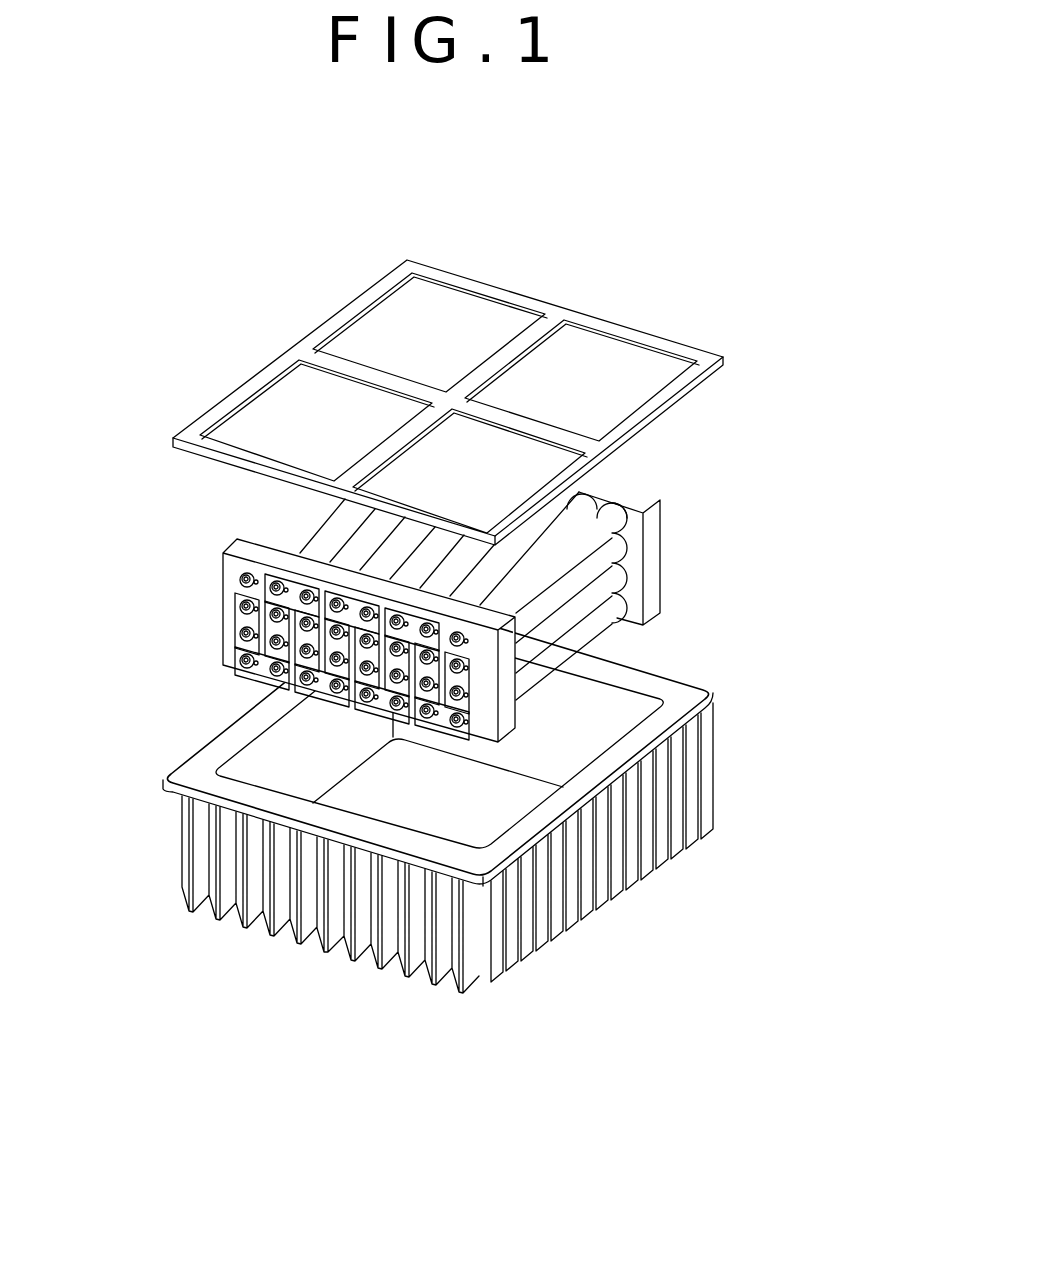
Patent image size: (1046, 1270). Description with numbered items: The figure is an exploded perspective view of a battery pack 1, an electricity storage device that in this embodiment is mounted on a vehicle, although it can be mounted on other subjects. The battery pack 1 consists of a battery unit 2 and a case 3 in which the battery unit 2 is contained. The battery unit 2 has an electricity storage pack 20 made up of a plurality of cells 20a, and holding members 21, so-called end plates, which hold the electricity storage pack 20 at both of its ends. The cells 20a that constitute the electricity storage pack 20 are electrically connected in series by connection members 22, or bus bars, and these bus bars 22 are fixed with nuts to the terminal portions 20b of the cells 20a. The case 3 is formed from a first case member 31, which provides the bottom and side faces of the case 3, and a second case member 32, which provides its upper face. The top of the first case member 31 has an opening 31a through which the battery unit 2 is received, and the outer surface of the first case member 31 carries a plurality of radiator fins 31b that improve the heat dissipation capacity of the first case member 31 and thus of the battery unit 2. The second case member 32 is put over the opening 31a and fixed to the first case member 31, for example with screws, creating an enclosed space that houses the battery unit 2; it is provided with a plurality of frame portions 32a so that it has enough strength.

The battery pack 1 is at (456, 635).
The battery unit 2 is at (442, 583).
The case 3 is at (456, 635).
The electricity storage pack 20 is at (430, 583).
The cell 20a is at (308, 518).
The terminal portion 20b is at (237, 641).
The holding member 21 is at (641, 500).
The connection member 22 is at (238, 607).
The first case member 31 is at (456, 834).
The opening 31a is at (215, 752).
The radiator fin 31b is at (508, 960).
The second case member 32 is at (467, 372).
The frame portion 32a is at (500, 345).